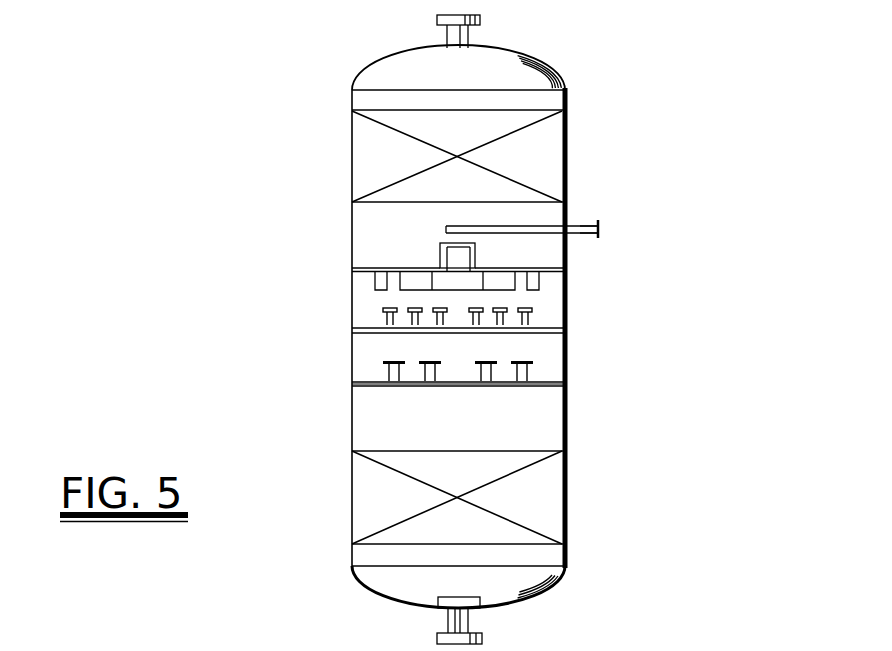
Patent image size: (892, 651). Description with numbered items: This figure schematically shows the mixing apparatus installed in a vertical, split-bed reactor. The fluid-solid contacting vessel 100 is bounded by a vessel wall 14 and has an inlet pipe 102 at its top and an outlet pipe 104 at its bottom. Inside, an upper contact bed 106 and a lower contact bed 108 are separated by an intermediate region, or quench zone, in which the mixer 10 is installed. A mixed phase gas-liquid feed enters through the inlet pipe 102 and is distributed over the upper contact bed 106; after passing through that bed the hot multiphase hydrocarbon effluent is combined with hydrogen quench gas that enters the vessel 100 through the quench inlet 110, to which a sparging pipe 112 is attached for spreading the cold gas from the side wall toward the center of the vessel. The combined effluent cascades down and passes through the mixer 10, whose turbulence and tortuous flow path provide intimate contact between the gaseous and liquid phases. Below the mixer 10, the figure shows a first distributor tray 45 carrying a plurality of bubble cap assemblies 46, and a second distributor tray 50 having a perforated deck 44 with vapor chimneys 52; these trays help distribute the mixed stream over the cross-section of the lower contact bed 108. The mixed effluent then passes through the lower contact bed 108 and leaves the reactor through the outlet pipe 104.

The fluid-solid contacting vessel 100 is at (300, 86).
The vessel wall 14 is at (567, 100).
The inlet pipe 102 is at (472, 33).
The outlet pipe 104 is at (468, 617).
The upper contact bed 106 is at (380, 150).
The lower contact bed 108 is at (376, 490).
The quench inlet 110 is at (583, 224).
The sparging pipe 112 is at (522, 225).
The mixer 10 is at (319, 299).
The first distributor tray 45 is at (360, 325).
The bubble cap assemblies 46 is at (533, 308).
The perforated deck 44 is at (365, 380).
The vapor chimneys 52 is at (533, 362).
The second distributor tray 50 is at (323, 393).